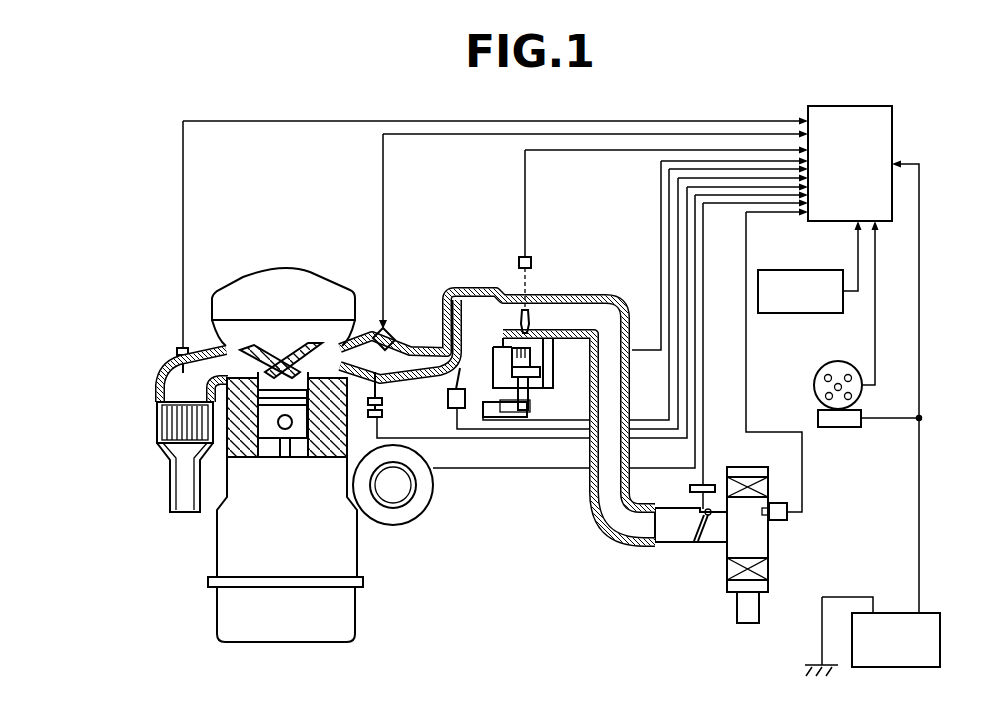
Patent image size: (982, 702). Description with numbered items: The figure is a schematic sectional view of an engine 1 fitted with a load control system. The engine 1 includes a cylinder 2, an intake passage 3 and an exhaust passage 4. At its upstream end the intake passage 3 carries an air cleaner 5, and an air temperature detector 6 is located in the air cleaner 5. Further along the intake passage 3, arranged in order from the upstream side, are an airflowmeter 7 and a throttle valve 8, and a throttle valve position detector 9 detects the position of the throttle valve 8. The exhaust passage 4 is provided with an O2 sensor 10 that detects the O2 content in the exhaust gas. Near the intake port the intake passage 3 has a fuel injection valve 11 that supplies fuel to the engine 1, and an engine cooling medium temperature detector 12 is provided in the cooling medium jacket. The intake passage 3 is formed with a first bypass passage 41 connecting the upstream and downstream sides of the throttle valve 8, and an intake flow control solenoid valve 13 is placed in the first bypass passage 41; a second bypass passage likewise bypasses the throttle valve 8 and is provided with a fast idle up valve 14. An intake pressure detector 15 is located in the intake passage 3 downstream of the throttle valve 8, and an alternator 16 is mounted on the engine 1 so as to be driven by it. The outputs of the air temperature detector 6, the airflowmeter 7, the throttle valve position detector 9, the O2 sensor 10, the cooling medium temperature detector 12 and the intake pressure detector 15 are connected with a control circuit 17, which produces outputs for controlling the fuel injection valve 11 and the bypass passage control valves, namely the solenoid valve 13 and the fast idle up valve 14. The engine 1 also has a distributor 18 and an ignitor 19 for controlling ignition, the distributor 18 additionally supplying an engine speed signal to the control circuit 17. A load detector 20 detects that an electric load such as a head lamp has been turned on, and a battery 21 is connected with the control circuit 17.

The engine 1 is at (248, 293).
The cylinder 2 is at (296, 452).
The intake passage 3 is at (582, 306).
The exhaust passage 4 is at (156, 402).
The air cleaner 5 is at (770, 548).
The air temperature detector 6 is at (781, 502).
The airflowmeter 7 is at (702, 511).
The throttle valve 8 is at (532, 304).
The throttle valve position detector 9 is at (531, 257).
The O2 sensor 10 is at (177, 351).
The fuel injection valve 11 is at (388, 334).
The engine cooling medium temperature detector 12 is at (383, 411).
The intake flow control solenoid valve 13 is at (498, 346).
The fast idle up valve 14 is at (528, 408).
The intake pressure detector 15 is at (456, 407).
The alternator 16 is at (410, 512).
The control circuit 17 is at (893, 128).
The distributor 18 is at (841, 364).
The ignitor 19 is at (840, 428).
The load detector 20 is at (797, 315).
The battery 21 is at (924, 628).
The first bypass passage 41 is at (546, 374).